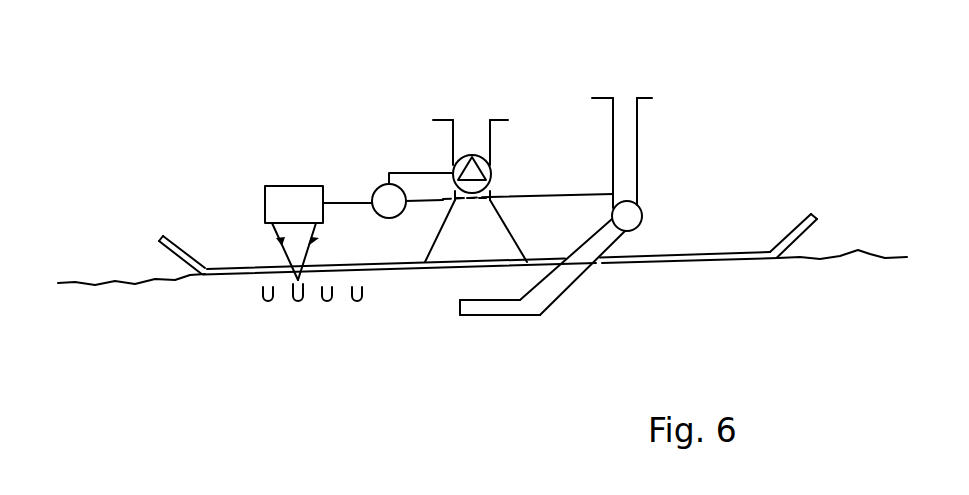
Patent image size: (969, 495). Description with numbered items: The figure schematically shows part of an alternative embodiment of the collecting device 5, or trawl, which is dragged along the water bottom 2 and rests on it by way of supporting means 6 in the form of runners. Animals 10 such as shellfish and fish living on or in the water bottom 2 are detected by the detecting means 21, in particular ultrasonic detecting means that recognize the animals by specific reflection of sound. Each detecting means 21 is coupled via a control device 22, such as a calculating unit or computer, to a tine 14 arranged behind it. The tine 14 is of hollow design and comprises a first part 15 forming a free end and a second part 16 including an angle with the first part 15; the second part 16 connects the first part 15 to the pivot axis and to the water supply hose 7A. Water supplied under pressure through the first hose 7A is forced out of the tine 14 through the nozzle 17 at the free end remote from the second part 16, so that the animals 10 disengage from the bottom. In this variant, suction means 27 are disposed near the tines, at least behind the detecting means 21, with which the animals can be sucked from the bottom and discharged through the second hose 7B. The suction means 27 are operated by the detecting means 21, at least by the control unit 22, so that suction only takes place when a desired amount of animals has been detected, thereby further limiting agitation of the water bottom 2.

The collecting device 5 is at (324, 126).
The water bottom 2 is at (881, 246).
The supporting means 6 is at (812, 229).
The detecting means 21 is at (292, 186).
The control device 22 is at (375, 176).
The second hose 7B is at (471, 135).
The first hose 7A is at (624, 112).
The suction means 27 is at (460, 237).
The animals 10 is at (299, 306).
The second part 16 is at (585, 270).
The first part 15 is at (497, 308).
The nozzle 17 is at (467, 323).
The tine 14 is at (531, 324).